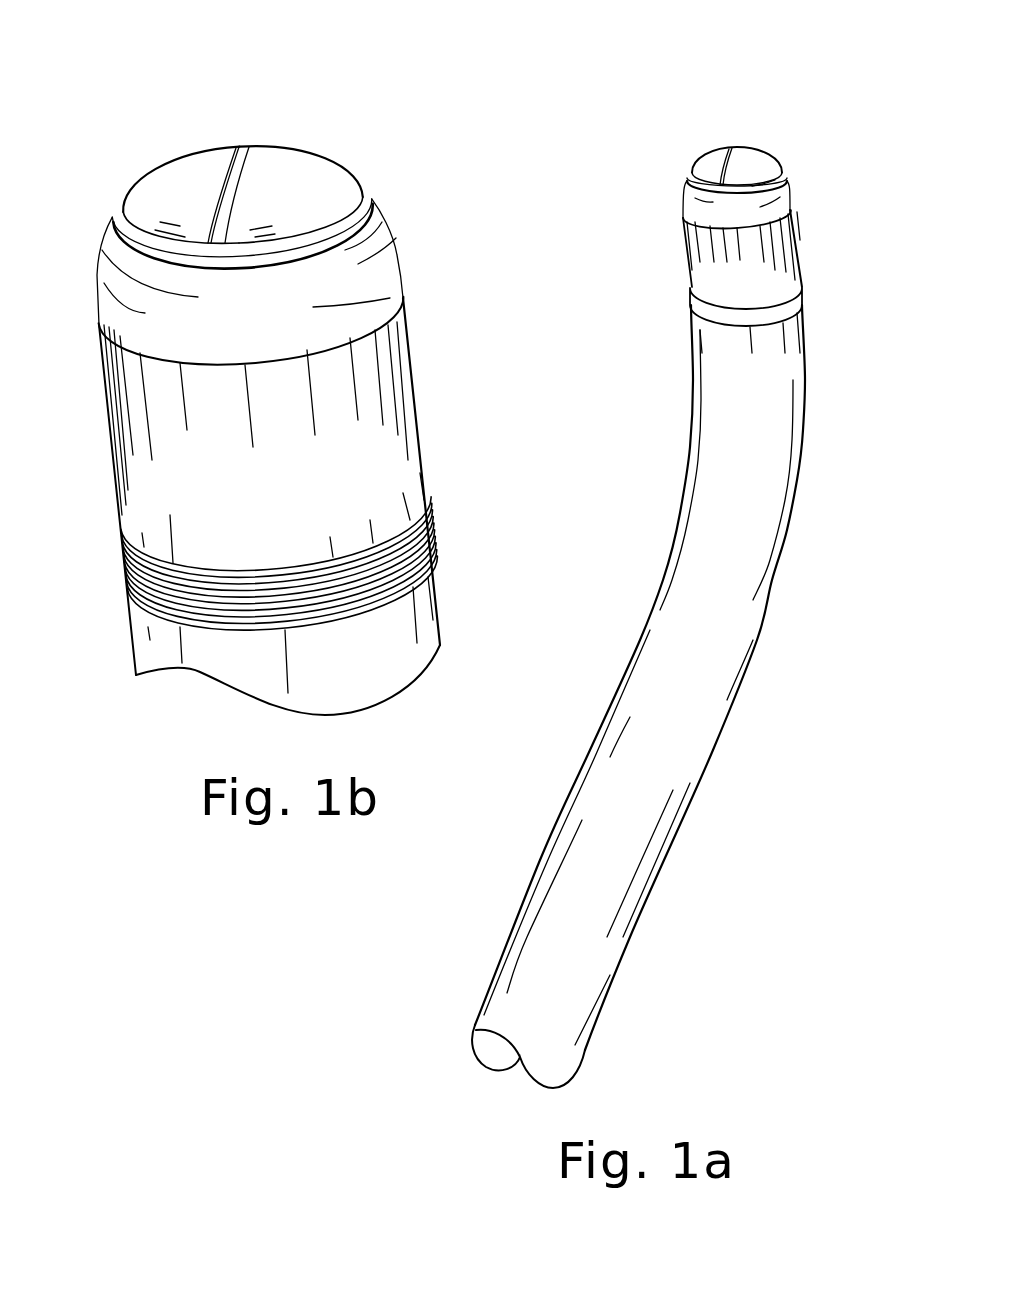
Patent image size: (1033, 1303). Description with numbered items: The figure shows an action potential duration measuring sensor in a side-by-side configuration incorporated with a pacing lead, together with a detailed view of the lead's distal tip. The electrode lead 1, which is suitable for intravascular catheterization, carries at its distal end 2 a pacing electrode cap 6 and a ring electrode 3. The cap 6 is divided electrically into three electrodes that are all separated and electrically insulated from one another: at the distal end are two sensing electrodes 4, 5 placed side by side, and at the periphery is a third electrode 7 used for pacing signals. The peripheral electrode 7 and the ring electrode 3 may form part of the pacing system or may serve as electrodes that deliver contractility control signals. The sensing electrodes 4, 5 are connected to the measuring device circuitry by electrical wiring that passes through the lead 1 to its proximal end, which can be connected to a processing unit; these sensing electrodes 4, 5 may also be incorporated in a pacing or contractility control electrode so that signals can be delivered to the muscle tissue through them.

In FIG. 1A, the electrode lead 1 is at (683, 748).
In FIG. 1B, the distal end 2 is at (360, 450).
In FIG. 1A, the distal end 2 is at (773, 250).
In FIG. 1B, the ring electrode 3 is at (120, 560).
In FIG. 1A, the ring electrode 3 is at (795, 295).
In FIG. 1B, the sensing electrode 4 is at (185, 183).
In FIG. 1B, the sensing electrode 5 is at (302, 178).
In FIG. 1A, the pacing electrode cap 6 is at (683, 555).
In FIG. 1B, the peripheral electrode 7 is at (357, 270).